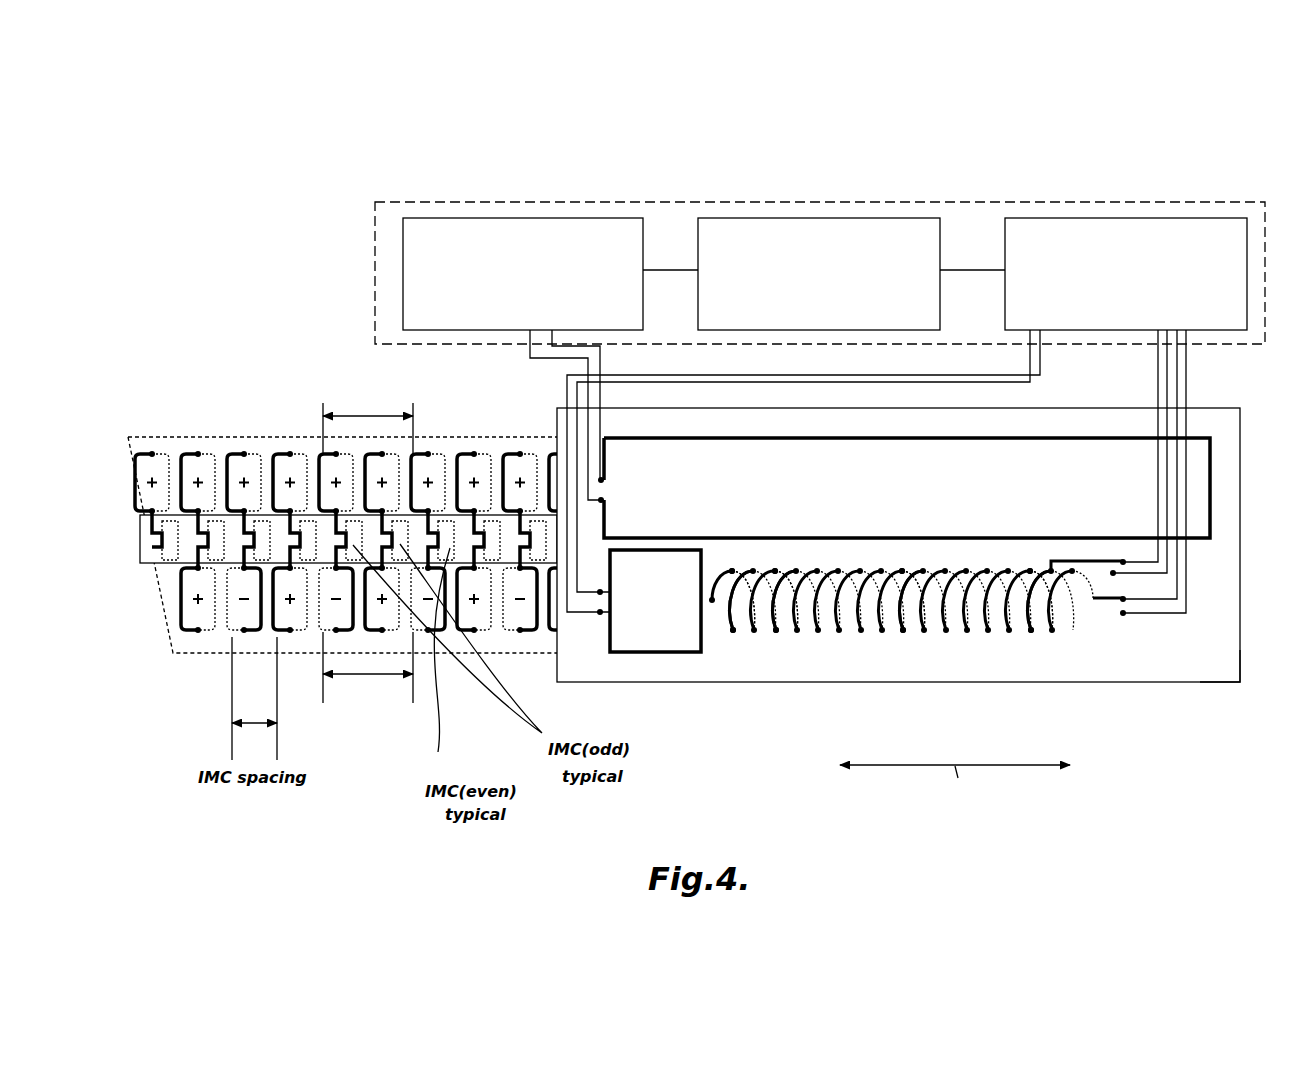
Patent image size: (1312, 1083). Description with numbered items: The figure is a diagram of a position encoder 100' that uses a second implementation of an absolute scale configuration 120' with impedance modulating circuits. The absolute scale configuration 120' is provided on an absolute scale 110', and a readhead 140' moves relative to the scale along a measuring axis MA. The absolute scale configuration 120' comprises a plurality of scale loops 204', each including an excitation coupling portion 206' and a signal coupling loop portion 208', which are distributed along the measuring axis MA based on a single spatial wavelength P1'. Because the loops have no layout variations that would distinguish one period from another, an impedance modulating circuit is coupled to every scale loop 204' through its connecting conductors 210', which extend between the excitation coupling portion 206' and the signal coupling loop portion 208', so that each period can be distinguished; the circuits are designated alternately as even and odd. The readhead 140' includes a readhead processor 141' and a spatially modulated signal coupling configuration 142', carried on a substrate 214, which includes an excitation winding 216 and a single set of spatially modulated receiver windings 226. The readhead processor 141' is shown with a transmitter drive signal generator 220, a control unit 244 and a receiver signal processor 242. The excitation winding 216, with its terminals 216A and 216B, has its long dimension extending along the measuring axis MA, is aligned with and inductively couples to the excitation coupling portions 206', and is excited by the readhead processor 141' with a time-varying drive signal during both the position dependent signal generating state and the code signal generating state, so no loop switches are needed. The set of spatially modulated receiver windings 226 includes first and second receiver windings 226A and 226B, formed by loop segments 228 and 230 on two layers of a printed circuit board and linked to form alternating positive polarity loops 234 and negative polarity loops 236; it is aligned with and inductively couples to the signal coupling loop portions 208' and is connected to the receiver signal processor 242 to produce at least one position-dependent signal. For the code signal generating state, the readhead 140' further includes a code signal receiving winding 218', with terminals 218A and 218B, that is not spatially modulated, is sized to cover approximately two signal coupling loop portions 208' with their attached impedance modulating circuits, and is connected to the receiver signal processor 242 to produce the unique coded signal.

The position encoder 100' is at (1205, 120).
The absolute scale 110' is at (327, 513).
The absolute scale configuration 120' is at (328, 516).
The readhead processor 141' is at (820, 258).
The spatially modulated signal coupling configuration 142' is at (925, 545).
The readhead 140' is at (1244, 701).
The scale loop 204' is at (309, 539).
The excitation coupling portion 206' is at (359, 459).
The signal coupling loop portion 208' is at (382, 628).
The connecting conductors 210' is at (330, 545).
The substrate 214 is at (888, 403).
The excitation winding 216 is at (915, 460).
The terminal 216A is at (603, 478).
The terminal 216B is at (603, 503).
The code signal receiving winding 218' is at (677, 668).
The terminal 218A is at (612, 578).
The terminal 218B is at (600, 618).
The transmitter drive signal generator 220 is at (523, 274).
The set of spatially modulated receiver windings 226 is at (940, 644).
The first receiver winding 226A is at (1105, 610).
The second receiver winding 226B is at (1106, 575).
The loop segments 228 is at (930, 645).
The loop segments 230 is at (1035, 645).
The positive polarity loops 234 is at (735, 645).
The negative polarity loops 236 is at (786, 645).
The receiver signal processor 242 is at (1126, 274).
The control unit 244 is at (819, 274).
The spatial wavelength P1' is at (368, 545).
The measuring axis MA is at (955, 783).